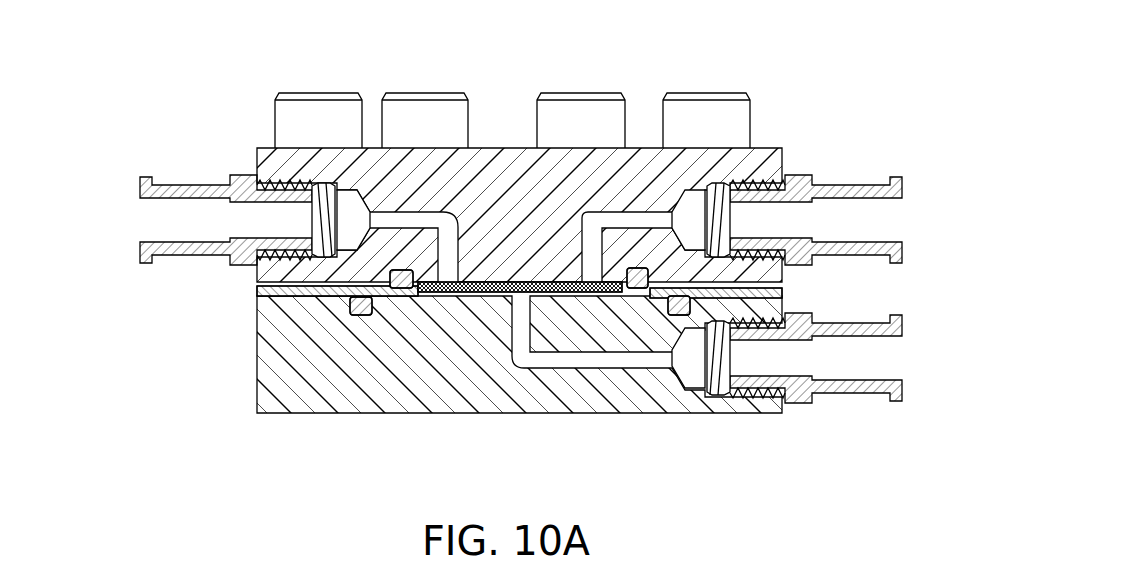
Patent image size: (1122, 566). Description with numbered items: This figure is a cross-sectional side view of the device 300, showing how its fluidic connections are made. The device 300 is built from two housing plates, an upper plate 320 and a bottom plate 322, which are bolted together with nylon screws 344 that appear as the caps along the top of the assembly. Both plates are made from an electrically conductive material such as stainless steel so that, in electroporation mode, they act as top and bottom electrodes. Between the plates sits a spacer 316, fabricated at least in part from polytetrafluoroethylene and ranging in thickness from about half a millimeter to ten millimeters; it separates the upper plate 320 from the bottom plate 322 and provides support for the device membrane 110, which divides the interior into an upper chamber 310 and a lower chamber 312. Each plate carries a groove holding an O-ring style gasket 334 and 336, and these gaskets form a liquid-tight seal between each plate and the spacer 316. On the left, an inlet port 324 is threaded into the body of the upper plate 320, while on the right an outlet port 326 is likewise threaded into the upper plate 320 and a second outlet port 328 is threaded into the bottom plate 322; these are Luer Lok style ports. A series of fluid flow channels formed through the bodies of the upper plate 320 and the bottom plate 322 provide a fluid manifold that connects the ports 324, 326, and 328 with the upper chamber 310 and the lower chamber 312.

The device 300 is at (528, 242).
The upper chamber 310 is at (525, 260).
The lower chamber 312 is at (450, 296).
The spacer 316 is at (783, 293).
The upper plate 320 is at (507, 190).
The bottom plate 322 is at (312, 392).
The inlet port 324 is at (165, 222).
The outlet port 326 is at (878, 222).
The outlet port 328 is at (876, 362).
The O-ring style gasket 334 is at (400, 278).
The O-ring style gasket 336 is at (363, 302).
The nylon screws 344 is at (708, 93).
The device membrane 110 is at (580, 292).